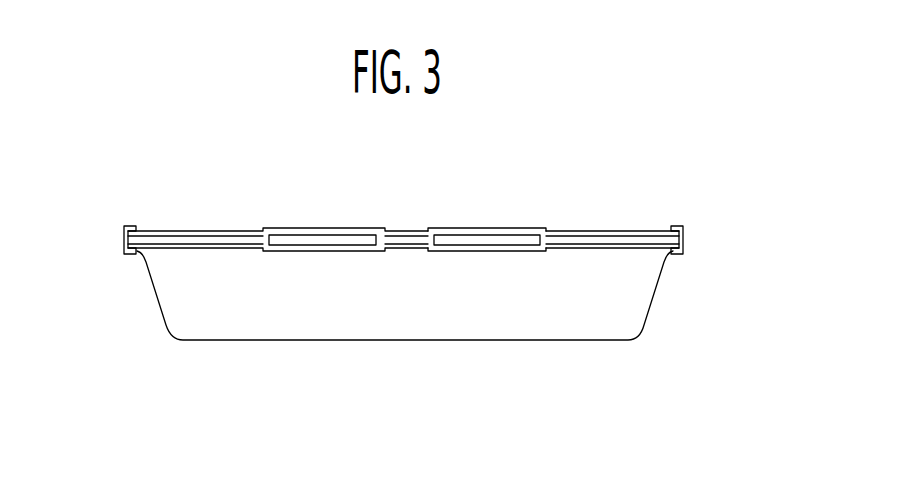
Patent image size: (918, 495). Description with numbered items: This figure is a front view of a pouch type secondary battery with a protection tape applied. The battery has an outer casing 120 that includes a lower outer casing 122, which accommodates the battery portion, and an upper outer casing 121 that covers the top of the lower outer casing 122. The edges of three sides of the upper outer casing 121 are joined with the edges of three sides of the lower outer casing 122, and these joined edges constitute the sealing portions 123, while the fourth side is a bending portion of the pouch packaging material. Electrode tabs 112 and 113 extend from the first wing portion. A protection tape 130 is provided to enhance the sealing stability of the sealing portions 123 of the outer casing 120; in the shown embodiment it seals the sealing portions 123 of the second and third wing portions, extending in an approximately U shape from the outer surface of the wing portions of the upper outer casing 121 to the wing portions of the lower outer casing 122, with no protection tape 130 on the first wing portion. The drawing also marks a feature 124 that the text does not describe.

The electrode tab 112 is at (490, 245).
The electrode tab 113 is at (325, 245).
The outer casing 120 is at (468, 213).
The upper outer casing 121 is at (682, 232).
The lower outer casing 122 is at (683, 247).
The sealing portions 123 is at (206, 236).
The protrusion 124 is at (543, 215).
The protection tape 130 is at (124, 234).